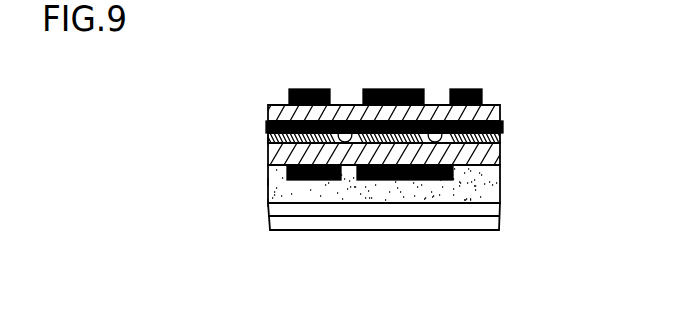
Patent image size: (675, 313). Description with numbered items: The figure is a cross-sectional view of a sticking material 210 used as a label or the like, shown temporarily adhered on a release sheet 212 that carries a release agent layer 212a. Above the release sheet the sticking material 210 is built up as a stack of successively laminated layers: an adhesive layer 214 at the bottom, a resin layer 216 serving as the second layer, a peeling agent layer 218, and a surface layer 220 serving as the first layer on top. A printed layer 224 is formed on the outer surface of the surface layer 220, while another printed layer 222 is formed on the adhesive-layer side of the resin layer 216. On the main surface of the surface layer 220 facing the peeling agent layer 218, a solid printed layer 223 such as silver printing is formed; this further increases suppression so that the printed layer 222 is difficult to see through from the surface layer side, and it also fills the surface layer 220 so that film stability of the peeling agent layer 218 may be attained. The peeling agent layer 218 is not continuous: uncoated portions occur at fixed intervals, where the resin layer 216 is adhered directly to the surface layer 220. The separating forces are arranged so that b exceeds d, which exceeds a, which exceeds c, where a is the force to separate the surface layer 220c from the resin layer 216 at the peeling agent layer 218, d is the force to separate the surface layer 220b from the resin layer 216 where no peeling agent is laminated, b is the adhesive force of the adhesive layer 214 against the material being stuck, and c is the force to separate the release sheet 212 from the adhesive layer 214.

The sticking material 210 is at (433, 166).
The release sheet 212 is at (384, 248).
The release agent layer 212a is at (425, 210).
The adhesive layer 214 is at (490, 192).
The resin layer 216 is at (499, 158).
The peeling agent layer 218 is at (498, 144).
The surface layer 220 is at (500, 111).
The surface layer portion 220b is at (357, 107).
The surface layer portion 220c is at (283, 110).
The printed layer 222 is at (455, 180).
The solid printed layer 223 is at (503, 130).
The printed layer 224 is at (508, 78).
The separating force at peeling agent layer a is at (272, 140).
The adhesive force b is at (276, 182).
The release sheet separating force c is at (272, 199).
The separating force outside peeling agent layer d is at (341, 136).